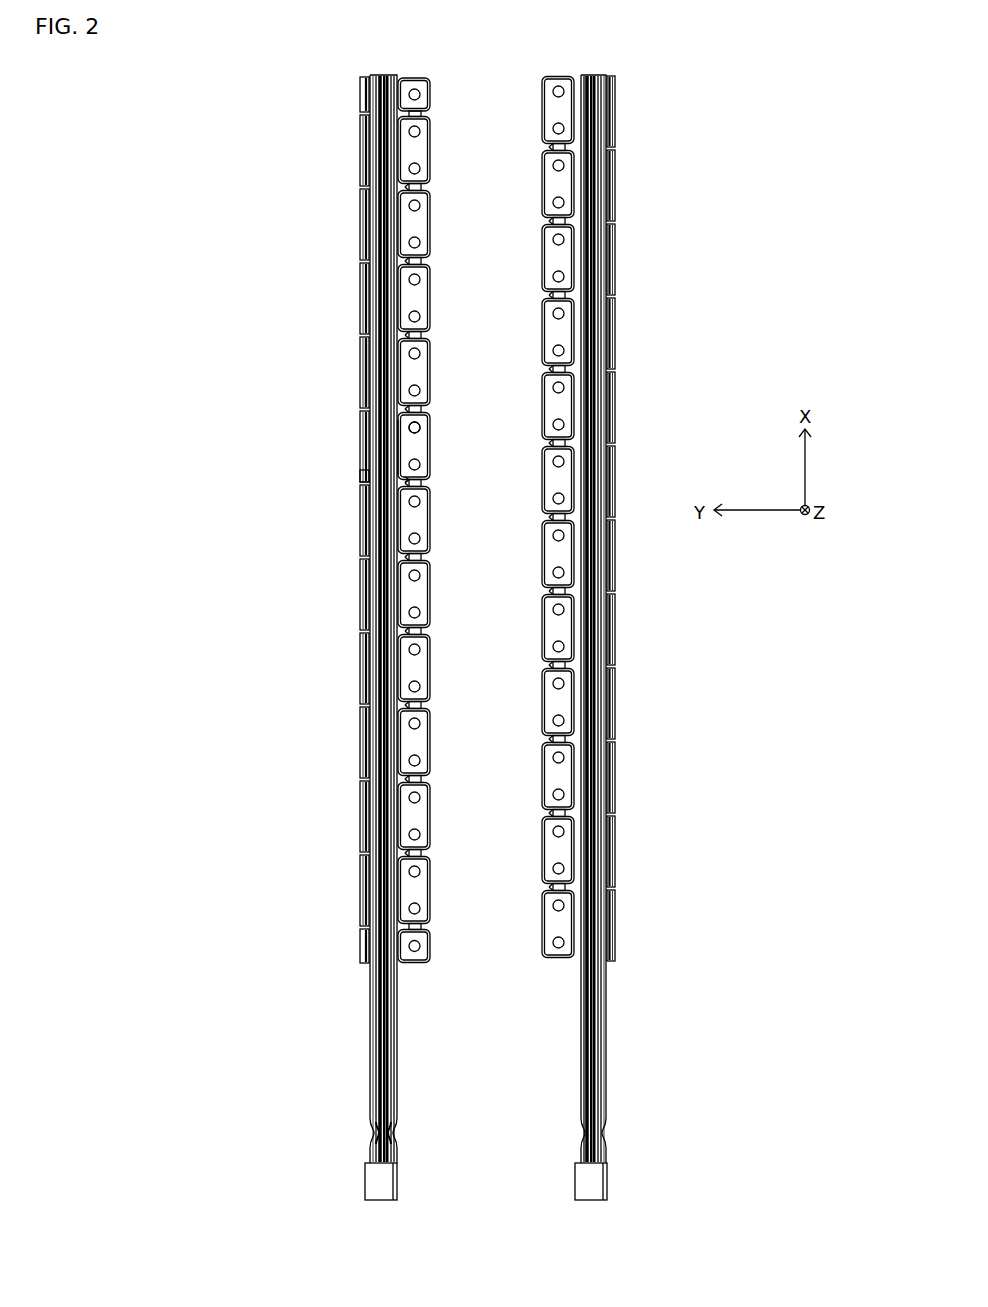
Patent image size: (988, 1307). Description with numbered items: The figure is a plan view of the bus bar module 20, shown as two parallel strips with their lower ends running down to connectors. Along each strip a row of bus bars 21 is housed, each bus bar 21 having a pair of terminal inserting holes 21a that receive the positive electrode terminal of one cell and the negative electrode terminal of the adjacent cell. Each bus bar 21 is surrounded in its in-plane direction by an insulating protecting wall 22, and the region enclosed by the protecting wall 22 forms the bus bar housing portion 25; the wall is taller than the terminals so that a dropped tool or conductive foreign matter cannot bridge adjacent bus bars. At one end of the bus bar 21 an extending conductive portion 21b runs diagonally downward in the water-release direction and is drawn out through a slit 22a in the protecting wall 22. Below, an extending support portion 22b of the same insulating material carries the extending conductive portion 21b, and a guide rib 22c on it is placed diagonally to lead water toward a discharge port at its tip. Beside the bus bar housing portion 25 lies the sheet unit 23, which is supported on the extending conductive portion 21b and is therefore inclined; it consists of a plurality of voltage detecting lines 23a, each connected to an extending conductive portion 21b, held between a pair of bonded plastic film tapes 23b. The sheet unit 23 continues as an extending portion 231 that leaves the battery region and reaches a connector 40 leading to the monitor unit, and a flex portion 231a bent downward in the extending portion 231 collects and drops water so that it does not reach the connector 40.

The bus bar module 20 is at (283, 346).
The bus bar 21 is at (423, 453).
The terminal inserting hole 21a is at (399, 441).
The extending conductive portion 21b is at (398, 447).
The protecting wall 22 is at (420, 412).
The slit 22a is at (430, 388).
The extending support portion 22b is at (362, 477).
The guide rib 22c is at (360, 430).
The sheet unit 23 is at (358, 380).
The voltage detecting line 23a is at (365, 393).
The plastic film tape 23b is at (362, 411).
The bus bar housing portion 25 is at (432, 484).
The extending portion 231 is at (376, 1082).
The flex portion 231a is at (373, 1130).
The connector 40 is at (378, 1186).